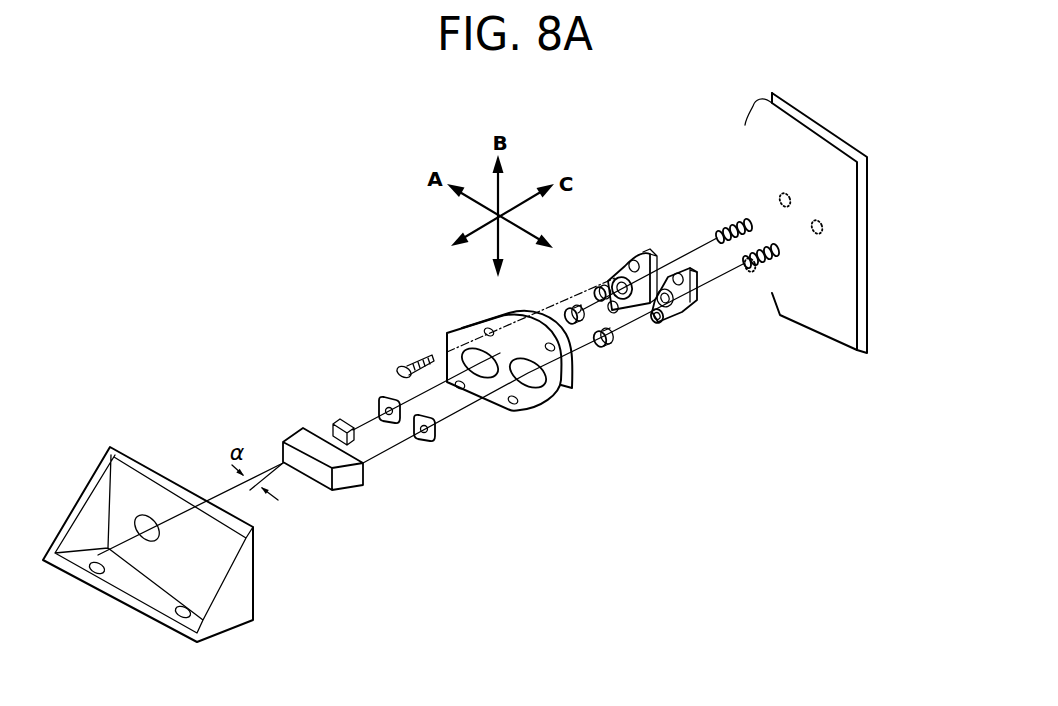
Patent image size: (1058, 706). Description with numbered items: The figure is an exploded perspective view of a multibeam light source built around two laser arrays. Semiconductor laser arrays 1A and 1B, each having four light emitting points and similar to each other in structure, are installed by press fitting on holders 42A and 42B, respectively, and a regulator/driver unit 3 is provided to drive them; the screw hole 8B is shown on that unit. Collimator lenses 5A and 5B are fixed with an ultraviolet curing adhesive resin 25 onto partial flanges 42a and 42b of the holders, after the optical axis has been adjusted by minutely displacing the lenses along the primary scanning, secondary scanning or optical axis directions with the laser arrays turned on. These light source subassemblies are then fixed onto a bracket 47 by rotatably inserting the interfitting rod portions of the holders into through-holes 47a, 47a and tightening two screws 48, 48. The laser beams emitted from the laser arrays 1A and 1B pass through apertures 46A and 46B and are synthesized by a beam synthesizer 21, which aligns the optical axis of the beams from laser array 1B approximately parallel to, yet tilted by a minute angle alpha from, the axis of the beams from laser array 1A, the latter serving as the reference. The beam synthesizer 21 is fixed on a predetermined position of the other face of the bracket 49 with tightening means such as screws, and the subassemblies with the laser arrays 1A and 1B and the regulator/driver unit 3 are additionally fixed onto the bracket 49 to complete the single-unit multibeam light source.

The regulator/driver unit 3 is at (772, 113).
The semiconductor laser array 1A is at (740, 220).
The semiconductor laser array 1B is at (772, 263).
The mounting hole 8B is at (748, 277).
The holder 42A is at (623, 255).
The holder 42B is at (692, 312).
The partial flange 42a is at (645, 322).
The partial flange 42b is at (648, 272).
The ultraviolet curing adhesive resin 25 is at (592, 286).
The collimator lens 5A is at (567, 309).
The collimator lens 5B is at (605, 348).
The bracket 47 is at (537, 398).
The through-hole 47a is at (446, 358).
The screw 48 is at (410, 357).
The aperture 46A is at (376, 400).
The aperture 46B is at (438, 441).
The beam synthesizer 21 is at (368, 480).
The bracket 49 is at (238, 607).